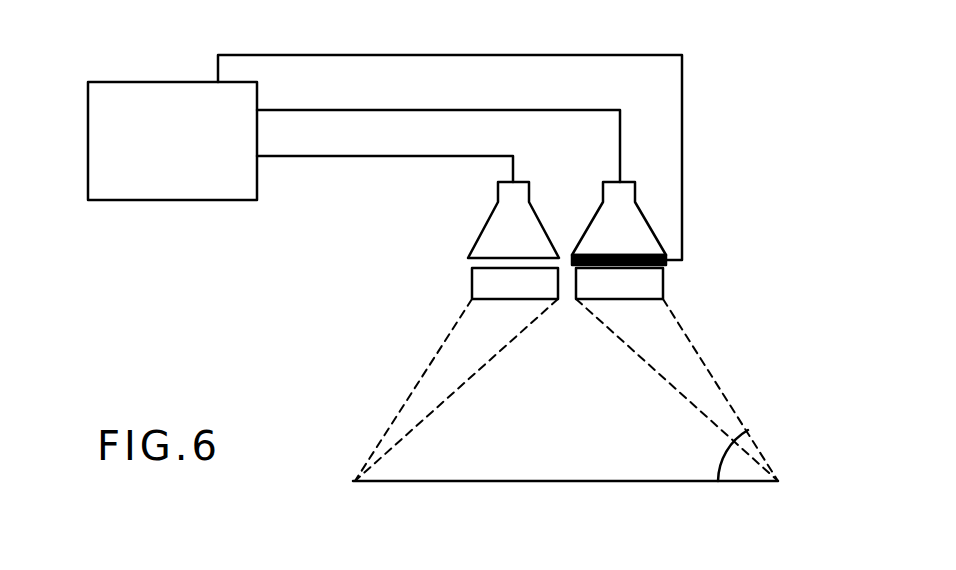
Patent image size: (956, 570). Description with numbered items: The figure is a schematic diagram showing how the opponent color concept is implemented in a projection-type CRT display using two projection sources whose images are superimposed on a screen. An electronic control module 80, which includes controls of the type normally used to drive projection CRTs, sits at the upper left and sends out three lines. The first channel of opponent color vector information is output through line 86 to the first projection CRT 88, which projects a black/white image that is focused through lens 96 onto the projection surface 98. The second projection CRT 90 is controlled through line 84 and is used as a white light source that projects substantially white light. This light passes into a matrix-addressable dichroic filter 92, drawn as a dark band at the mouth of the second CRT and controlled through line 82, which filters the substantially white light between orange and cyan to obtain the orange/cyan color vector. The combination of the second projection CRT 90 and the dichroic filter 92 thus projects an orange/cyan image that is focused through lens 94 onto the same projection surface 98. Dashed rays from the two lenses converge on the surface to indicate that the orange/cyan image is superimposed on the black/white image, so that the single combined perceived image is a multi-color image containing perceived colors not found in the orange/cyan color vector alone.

The electronic control module 80 is at (157, 82).
The line 82 is at (627, 55).
The line 84 is at (480, 110).
The line 86 is at (483, 156).
The projection CRT 88 is at (498, 222).
The second projection CRT 90 is at (632, 220).
The matrix-addressable dichroic filter 92 is at (667, 268).
The lens 94 is at (666, 280).
The lens 96 is at (487, 278).
The projection surface 98 is at (748, 430).